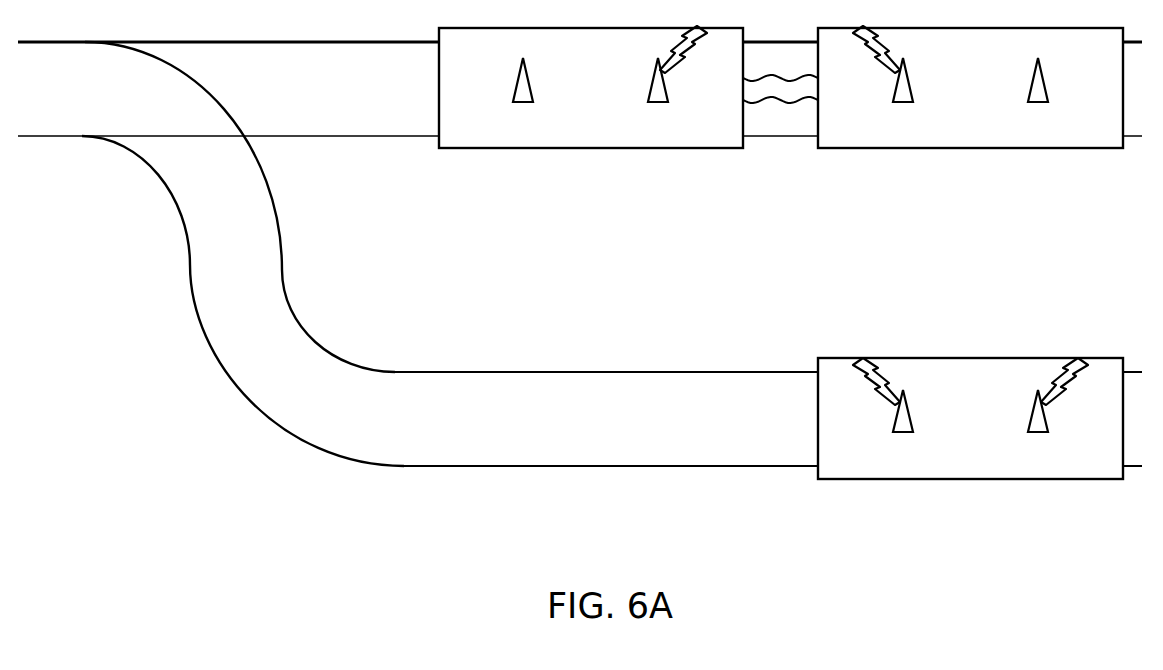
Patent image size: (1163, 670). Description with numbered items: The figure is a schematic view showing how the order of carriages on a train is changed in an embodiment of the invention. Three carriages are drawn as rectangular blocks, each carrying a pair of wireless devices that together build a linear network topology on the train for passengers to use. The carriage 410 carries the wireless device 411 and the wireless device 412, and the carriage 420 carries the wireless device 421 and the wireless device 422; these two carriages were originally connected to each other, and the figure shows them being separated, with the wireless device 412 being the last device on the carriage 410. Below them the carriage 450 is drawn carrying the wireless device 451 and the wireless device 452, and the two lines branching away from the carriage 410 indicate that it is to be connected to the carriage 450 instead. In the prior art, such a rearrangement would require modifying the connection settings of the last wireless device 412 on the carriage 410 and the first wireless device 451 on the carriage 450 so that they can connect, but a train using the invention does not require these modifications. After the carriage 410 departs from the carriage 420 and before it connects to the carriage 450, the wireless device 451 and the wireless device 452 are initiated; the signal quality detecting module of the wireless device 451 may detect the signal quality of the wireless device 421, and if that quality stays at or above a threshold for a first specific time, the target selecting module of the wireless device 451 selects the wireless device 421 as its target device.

The carriage 410 is at (483, 143).
The wireless device 411 is at (521, 104).
The wireless device 412 is at (659, 104).
The carriage 420 is at (863, 143).
The wireless device 421 is at (902, 104).
The wireless device 422 is at (1037, 104).
The carriage 450 is at (863, 473).
The wireless device 451 is at (902, 434).
The wireless device 452 is at (1037, 434).